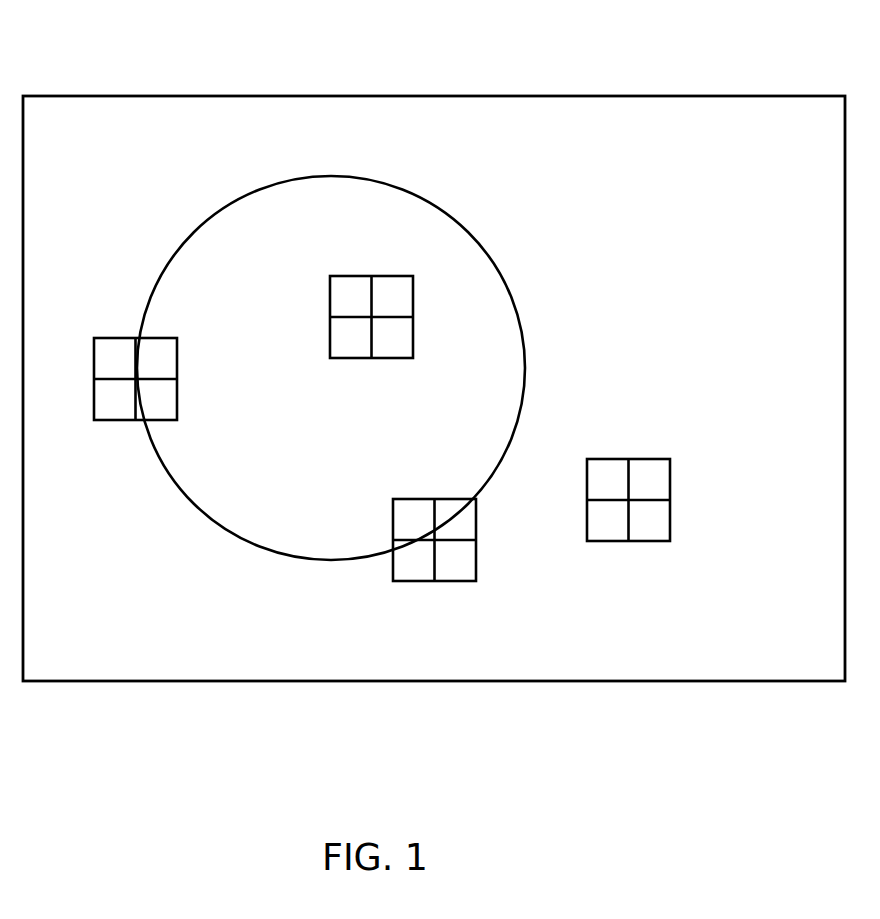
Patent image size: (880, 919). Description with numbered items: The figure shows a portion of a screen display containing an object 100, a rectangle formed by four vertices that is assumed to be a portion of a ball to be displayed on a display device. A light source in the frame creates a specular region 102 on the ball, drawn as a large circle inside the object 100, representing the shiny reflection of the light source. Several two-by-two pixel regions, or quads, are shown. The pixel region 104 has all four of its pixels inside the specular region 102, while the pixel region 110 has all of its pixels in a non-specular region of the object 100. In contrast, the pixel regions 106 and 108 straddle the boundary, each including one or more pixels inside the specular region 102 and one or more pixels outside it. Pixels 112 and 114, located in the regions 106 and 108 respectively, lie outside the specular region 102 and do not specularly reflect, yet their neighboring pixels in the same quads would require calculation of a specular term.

The object 100 is at (637, 96).
The specular region 102 is at (513, 296).
The 2×2 pixel region 104 is at (414, 298).
The 2×2 pixel region 106 is at (477, 519).
The 2×2 pixel region 108 is at (115, 336).
The 2×2 pixel region 110 is at (673, 518).
The pixel 112 is at (413, 560).
The pixel 114 is at (115, 398).